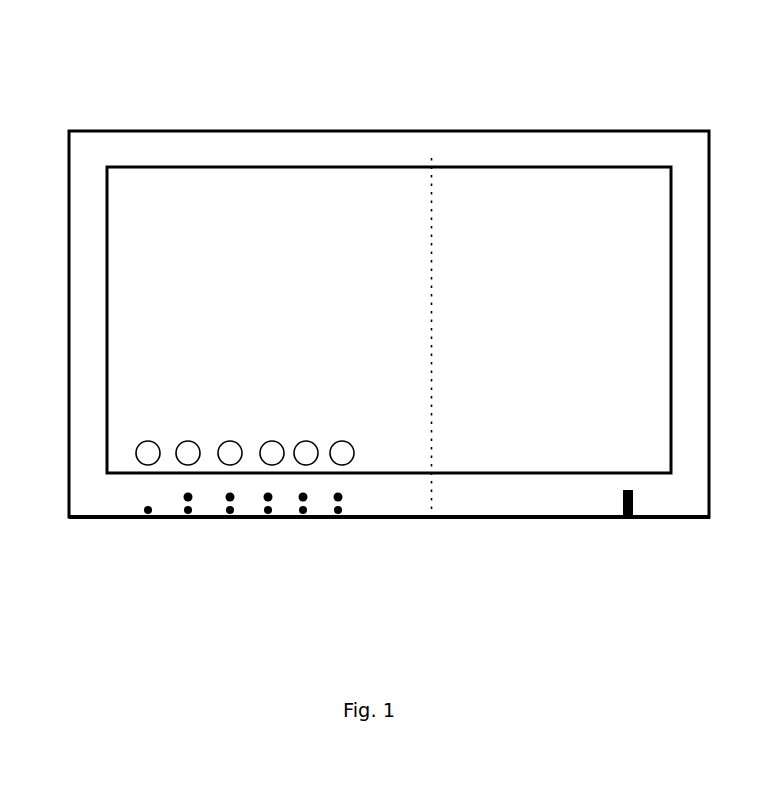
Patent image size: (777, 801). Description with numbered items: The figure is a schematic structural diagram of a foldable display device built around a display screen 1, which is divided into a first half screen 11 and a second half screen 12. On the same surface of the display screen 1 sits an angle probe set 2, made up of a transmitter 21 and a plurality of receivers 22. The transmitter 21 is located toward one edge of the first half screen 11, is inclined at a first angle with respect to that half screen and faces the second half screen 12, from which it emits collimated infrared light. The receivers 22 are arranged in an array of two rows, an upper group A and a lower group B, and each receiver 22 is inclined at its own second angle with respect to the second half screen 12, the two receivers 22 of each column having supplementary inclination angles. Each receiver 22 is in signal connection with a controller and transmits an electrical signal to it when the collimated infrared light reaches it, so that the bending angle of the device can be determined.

The display screen 1 is at (126, 131).
The first half screen 11 is at (533, 188).
The second half screen 12 is at (256, 183).
The angle probe set 2 is at (108, 543).
The transmitter 21 is at (622, 517).
The receivers 22 is at (292, 517).